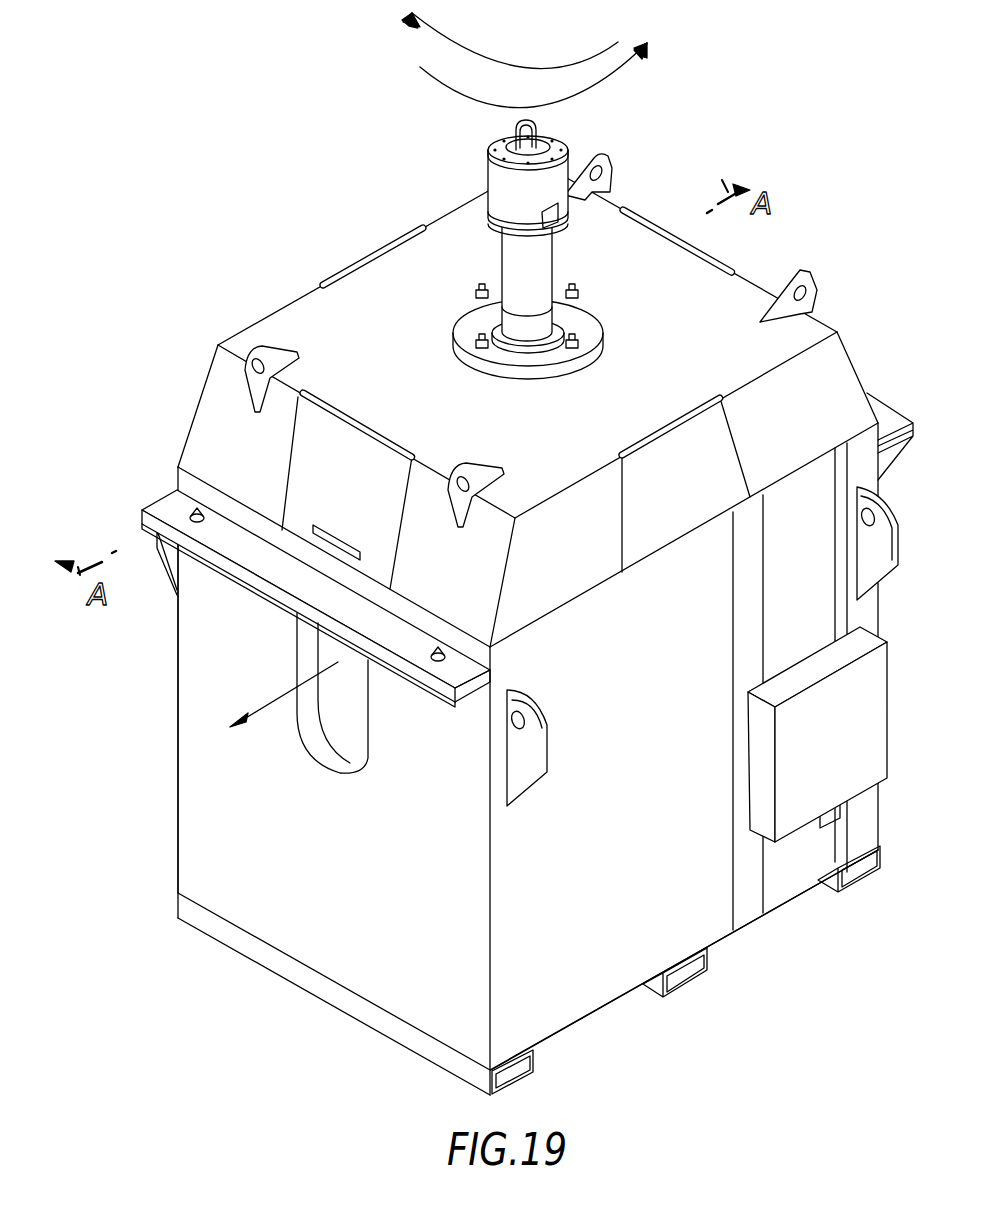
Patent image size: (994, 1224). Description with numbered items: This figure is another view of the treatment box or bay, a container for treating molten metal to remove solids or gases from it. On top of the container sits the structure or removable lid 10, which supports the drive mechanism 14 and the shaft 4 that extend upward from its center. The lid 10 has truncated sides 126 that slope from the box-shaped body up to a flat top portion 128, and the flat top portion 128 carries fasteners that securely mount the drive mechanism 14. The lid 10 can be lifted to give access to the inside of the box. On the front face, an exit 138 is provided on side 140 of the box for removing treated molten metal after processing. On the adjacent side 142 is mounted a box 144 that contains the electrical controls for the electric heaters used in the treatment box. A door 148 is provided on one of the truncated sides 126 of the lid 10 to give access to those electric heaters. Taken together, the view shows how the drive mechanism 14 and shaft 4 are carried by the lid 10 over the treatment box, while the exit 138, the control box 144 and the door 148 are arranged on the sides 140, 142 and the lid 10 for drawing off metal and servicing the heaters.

The removable lid 10 is at (728, 303).
The drive mechanism 14 is at (497, 186).
The shaft 4 is at (544, 250).
The truncated sides 126 is at (293, 452).
The flat top portion 128 is at (305, 318).
The exit 138 is at (310, 645).
The side 140 is at (200, 802).
The side 142 is at (795, 492).
The box for containing electrical controls 144 is at (870, 716).
The door 148 is at (637, 518).